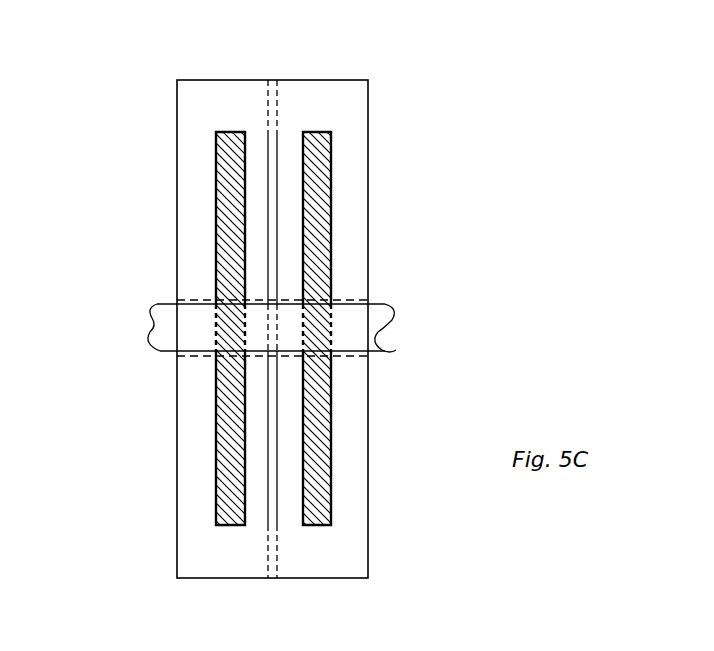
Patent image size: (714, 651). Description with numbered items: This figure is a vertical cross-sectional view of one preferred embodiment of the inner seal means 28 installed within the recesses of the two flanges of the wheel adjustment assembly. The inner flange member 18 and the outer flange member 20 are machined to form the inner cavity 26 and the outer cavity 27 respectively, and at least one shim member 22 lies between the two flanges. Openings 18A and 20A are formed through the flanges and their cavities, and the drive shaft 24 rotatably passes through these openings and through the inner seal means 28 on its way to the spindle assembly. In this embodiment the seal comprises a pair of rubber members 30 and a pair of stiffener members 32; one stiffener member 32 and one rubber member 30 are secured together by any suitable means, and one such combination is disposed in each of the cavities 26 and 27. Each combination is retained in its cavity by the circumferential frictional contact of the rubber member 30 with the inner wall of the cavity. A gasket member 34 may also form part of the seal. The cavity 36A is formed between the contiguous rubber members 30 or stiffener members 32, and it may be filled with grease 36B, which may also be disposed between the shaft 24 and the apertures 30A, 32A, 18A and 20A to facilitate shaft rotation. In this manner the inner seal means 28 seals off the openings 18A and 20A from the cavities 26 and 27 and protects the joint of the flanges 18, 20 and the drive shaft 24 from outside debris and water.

The inner flange member 18 is at (317, 80).
The opening 18A is at (360, 303).
The outer flange member 20 is at (228, 80).
The opening 20A is at (197, 302).
The shim member 22 is at (274, 80).
The drive shaft 24 is at (386, 349).
The inner cavity 26 is at (313, 132).
The outer cavity 27 is at (232, 132).
The inner seal means 28 is at (403, 532).
The rubber flap member 30 is at (306, 131).
The aperture 30A is at (215, 287).
The stiffener member 32 is at (283, 174).
The aperture 32A is at (215, 208).
The gasket member 34 is at (268, 525).
The cavity 36A is at (275, 258).
The grease 36B is at (270, 208).